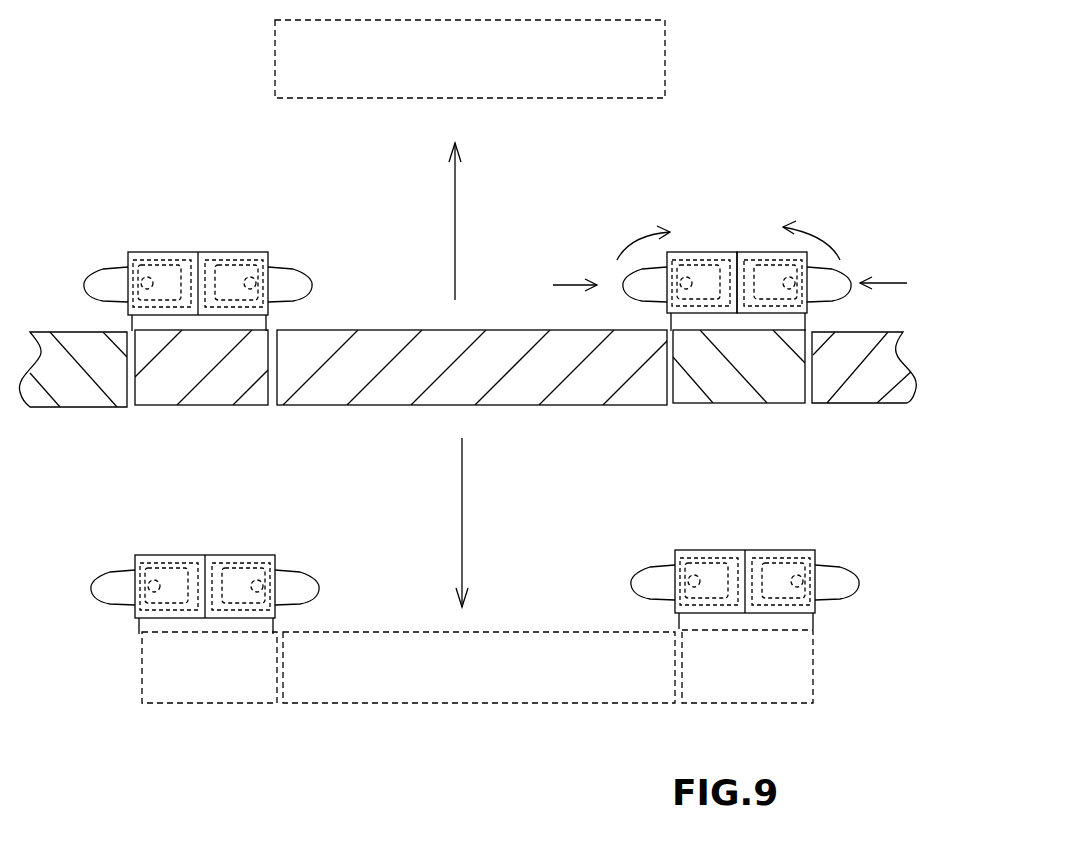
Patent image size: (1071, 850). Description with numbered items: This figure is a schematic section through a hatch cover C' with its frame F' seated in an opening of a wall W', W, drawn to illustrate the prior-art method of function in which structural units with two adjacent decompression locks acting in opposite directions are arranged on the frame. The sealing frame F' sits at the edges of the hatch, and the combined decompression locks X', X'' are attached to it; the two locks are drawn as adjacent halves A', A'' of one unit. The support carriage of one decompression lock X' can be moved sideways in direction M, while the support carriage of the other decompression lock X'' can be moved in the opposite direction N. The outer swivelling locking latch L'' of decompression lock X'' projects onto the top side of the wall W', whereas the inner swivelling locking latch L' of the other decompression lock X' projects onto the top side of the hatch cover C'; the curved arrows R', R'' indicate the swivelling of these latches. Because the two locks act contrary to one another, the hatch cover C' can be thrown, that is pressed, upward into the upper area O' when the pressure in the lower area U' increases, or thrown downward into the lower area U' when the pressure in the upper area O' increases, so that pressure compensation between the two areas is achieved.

The upper area O' is at (470, 111).
The lower area U' is at (477, 580).
The wall W' is at (73, 415).
The frame F' is at (470, 425).
The hatch cover C' is at (455, 405).
The workpiece (right) W is at (864, 411).
The first clamping jaw half A' is at (655, 357).
The second clamping jaw half A'' is at (759, 358).
The decompression lock X' is at (696, 230).
The decompression lock X'' is at (774, 223).
The inner swivelling locking latch L' is at (605, 255).
The outer swivelling locking latch L'' is at (874, 255).
The first rotation direction R' is at (641, 232).
The second rotation direction R'' is at (820, 231).
The direction - N is at (572, 299).
The direction - M is at (883, 298).